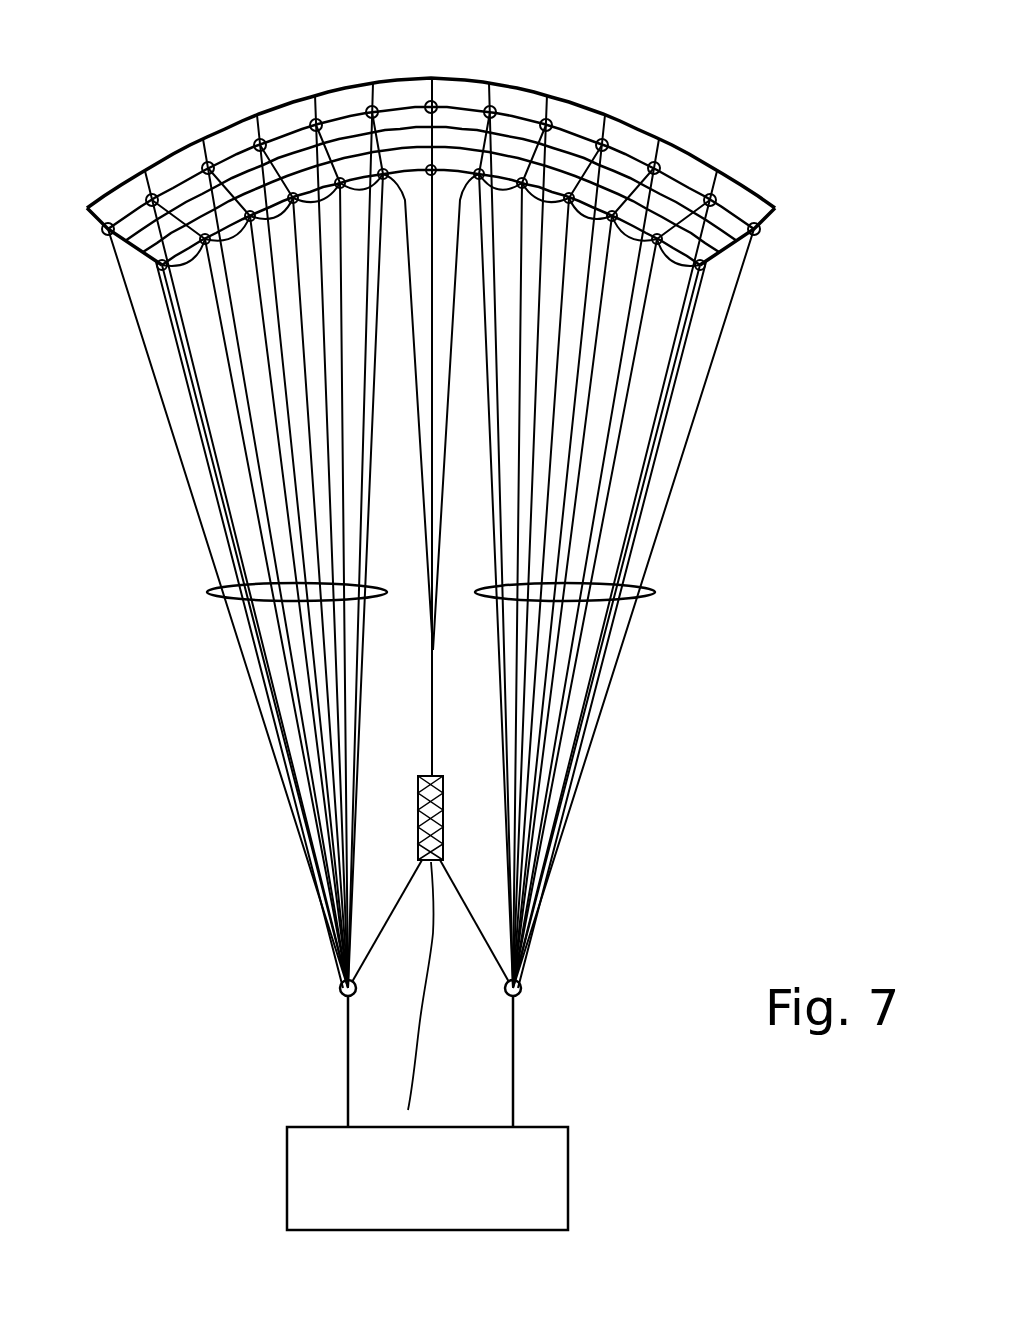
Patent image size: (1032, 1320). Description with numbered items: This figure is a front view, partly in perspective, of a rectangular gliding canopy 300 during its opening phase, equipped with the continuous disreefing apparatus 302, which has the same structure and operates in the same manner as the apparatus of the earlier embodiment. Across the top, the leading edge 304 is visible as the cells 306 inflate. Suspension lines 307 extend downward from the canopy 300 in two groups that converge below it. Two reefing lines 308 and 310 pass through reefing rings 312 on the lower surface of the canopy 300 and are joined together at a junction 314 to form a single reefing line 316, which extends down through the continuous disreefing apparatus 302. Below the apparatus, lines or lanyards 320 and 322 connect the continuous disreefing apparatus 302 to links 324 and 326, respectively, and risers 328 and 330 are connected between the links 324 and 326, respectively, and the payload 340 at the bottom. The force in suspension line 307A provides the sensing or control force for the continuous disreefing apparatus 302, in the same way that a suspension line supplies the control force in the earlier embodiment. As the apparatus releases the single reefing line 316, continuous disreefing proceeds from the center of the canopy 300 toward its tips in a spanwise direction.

The gliding canopy 300 is at (650, 125).
The continuous disreefing apparatus 302 is at (443, 827).
The leading edge 304 is at (470, 80).
The cells 306 is at (187, 190).
The suspension lines 307 is at (208, 592).
The suspension line 307A is at (447, 360).
The reefing line 308 is at (190, 275).
The reefing line 310 is at (444, 517).
The reefing rings 312 is at (163, 272).
The junction 314 is at (427, 652).
The single reefing line 316 is at (428, 727).
The line or lanyard 320 is at (377, 940).
The line or lanyard 322 is at (473, 923).
The link 324 is at (339, 988).
The link 326 is at (522, 986).
The riser 328 is at (346, 1047).
The riser 330 is at (515, 1063).
The payload 340 is at (570, 1175).